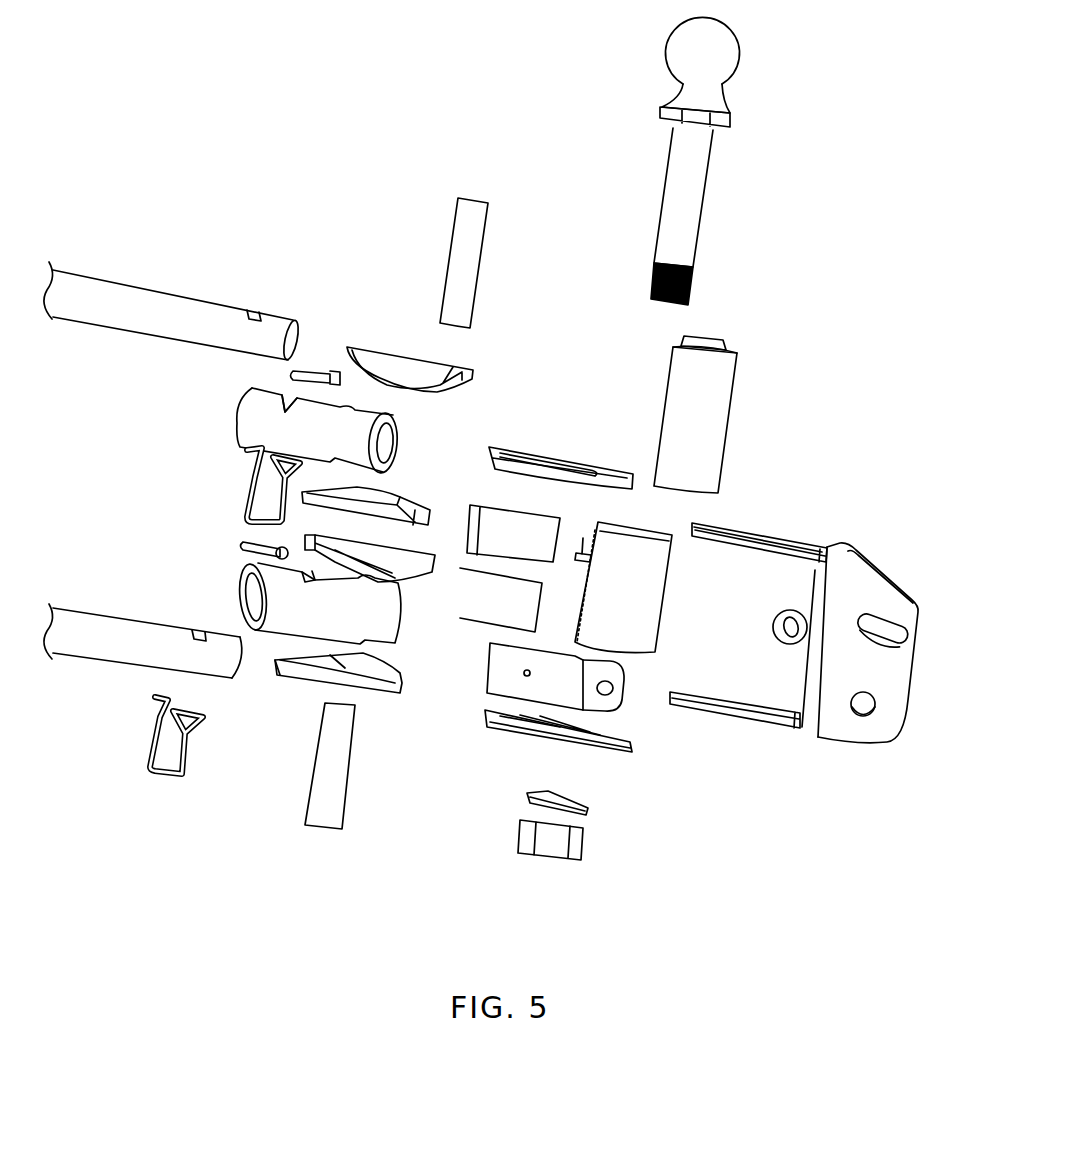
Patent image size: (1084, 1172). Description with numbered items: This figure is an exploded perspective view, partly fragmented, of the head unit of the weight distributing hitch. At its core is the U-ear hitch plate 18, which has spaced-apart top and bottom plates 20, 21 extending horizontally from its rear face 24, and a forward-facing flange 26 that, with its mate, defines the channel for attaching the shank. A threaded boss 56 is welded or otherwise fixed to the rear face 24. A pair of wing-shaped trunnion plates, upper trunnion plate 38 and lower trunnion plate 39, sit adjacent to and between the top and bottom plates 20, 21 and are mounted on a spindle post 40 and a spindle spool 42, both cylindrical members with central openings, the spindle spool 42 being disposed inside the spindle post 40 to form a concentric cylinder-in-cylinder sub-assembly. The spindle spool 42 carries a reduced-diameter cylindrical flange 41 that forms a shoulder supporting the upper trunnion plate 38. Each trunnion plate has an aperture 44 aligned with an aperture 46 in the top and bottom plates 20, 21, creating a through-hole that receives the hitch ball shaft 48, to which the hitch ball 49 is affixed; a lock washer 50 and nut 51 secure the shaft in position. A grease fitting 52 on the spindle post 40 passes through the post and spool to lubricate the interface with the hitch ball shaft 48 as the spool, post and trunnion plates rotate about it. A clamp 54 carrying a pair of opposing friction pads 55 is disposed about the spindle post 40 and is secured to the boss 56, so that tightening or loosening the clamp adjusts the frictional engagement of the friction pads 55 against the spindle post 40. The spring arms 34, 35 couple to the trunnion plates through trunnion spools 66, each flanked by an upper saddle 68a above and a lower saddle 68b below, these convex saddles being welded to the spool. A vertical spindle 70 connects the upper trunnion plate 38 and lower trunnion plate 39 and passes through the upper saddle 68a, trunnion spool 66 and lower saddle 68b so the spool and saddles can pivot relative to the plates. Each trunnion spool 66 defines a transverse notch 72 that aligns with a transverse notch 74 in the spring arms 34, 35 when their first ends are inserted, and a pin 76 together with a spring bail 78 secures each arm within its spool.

The U-ear hitch plate 18 is at (815, 625).
The top plate 20 is at (792, 550).
The bottom plate 21 is at (770, 722).
The rear face 24 is at (800, 674).
The flange 26 is at (892, 690).
The spring arm 34 is at (172, 438).
The spring arm 35 is at (140, 655).
The upper trunnion plate 38 is at (618, 478).
The lower trunnion plate 39 is at (615, 745).
The spindle post 40 is at (634, 603).
The cylindrical flange 41 is at (725, 346).
The spindle spool 42 is at (702, 436).
The aperture 44 is at (588, 472).
The aperture 46 is at (740, 527).
The hitch ball shaft 48 is at (690, 193).
The hitch ball 49 is at (725, 58).
The lock washer 50 is at (588, 808).
The nut 51 is at (555, 848).
The grease fitting 52 is at (585, 536).
The clamp 54 is at (563, 687).
The friction pad 55 is at (525, 545).
The boss 56 is at (791, 612).
The trunnion spool 66 is at (319, 516).
The upper saddle 68a is at (402, 362).
The lower saddle 68b is at (405, 497).
The spindle 70 is at (467, 264).
The transverse notch 72 is at (283, 509).
The transverse notch 74 is at (258, 316).
The pin 76 is at (316, 372).
The spring bail 78 is at (250, 490).